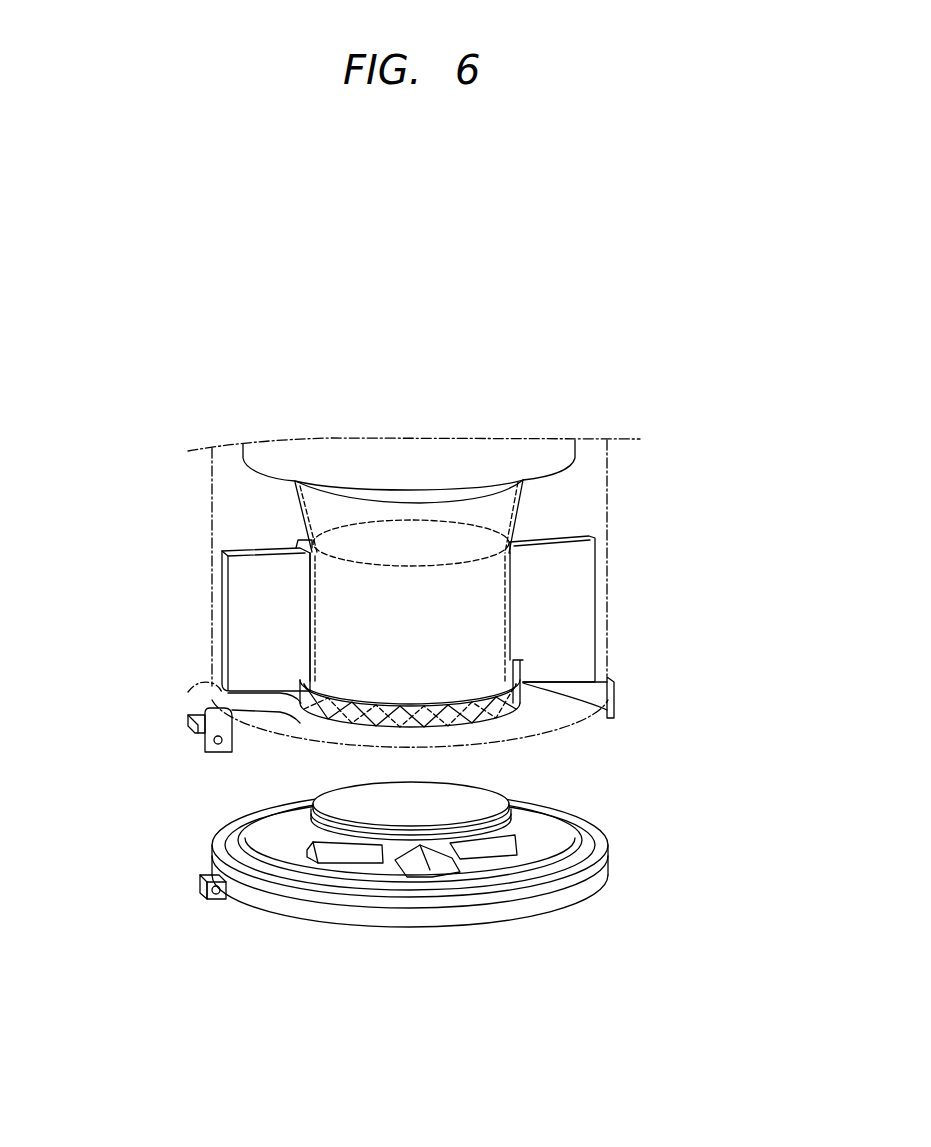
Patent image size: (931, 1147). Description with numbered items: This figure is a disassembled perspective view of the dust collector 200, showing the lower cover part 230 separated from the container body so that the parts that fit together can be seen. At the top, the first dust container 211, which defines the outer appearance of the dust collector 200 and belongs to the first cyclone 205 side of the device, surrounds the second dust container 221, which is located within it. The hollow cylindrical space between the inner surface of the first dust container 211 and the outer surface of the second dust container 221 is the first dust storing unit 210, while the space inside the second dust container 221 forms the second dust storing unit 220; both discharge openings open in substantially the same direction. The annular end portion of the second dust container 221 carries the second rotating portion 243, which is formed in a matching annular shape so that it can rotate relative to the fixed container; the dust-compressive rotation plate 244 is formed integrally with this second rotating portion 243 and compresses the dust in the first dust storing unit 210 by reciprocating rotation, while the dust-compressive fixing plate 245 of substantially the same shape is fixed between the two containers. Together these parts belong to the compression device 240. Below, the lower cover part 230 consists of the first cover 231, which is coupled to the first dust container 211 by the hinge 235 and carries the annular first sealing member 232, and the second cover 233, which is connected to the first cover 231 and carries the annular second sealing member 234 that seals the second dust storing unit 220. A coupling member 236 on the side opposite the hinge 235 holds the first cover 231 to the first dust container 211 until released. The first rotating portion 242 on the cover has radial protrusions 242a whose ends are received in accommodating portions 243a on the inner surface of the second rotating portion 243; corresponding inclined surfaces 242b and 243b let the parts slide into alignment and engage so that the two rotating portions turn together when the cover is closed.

The dust collector 200 is at (177, 314).
The first cyclone 205 is at (207, 605).
The first dust storing unit 210 is at (235, 487).
The first dust container 211 is at (210, 468).
The second dust storing unit 220 is at (300, 545).
The second dust container 221 is at (328, 517).
The lower cover part 230 is at (503, 854).
The first cover 231 is at (603, 897).
The first sealing member 232 is at (592, 850).
The second cover 233 is at (468, 800).
The second sealing member 234 is at (507, 833).
The hinge 235 is at (212, 887).
The coupling member 236 is at (618, 688).
The compression device 240 is at (77, 625).
The first rotating portion 242 is at (298, 900).
The protrusion 242a is at (428, 866).
The inclined surface 242b is at (402, 868).
The second rotating portion 243 is at (365, 722).
The accommodating portion 243a is at (500, 704).
The inclined surface 243b is at (512, 712).
The dust-compressive rotation plate 244 is at (240, 631).
The dust-compressive fixing plate 245 is at (583, 582).